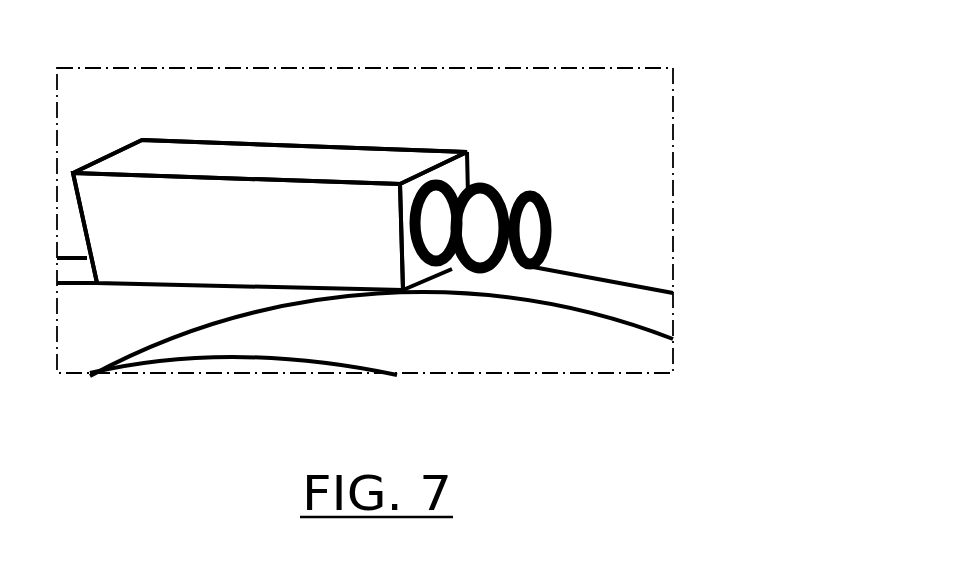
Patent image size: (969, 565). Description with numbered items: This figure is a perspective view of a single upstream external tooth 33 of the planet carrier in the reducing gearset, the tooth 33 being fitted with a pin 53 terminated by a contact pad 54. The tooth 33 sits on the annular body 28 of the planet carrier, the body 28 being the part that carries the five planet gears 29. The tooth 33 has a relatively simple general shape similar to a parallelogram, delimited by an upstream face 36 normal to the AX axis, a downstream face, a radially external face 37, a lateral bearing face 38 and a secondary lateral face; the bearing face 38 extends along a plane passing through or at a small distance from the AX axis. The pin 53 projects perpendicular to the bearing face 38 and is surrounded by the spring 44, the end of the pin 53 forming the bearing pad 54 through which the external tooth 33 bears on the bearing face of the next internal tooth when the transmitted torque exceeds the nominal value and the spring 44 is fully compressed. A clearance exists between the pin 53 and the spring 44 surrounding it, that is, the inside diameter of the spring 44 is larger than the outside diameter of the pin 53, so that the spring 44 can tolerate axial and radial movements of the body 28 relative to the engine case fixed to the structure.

The annular body 28 is at (227, 316).
The planet gear 29 is at (381, 321).
The upstream external tooth 33 is at (270, 215).
The upstream face 36 is at (140, 188).
The radially external face 37 is at (175, 157).
The lateral bearing face 38 is at (475, 160).
The spring 44 is at (485, 262).
The pin 53 is at (437, 185).
The contact pad 54 is at (552, 223).